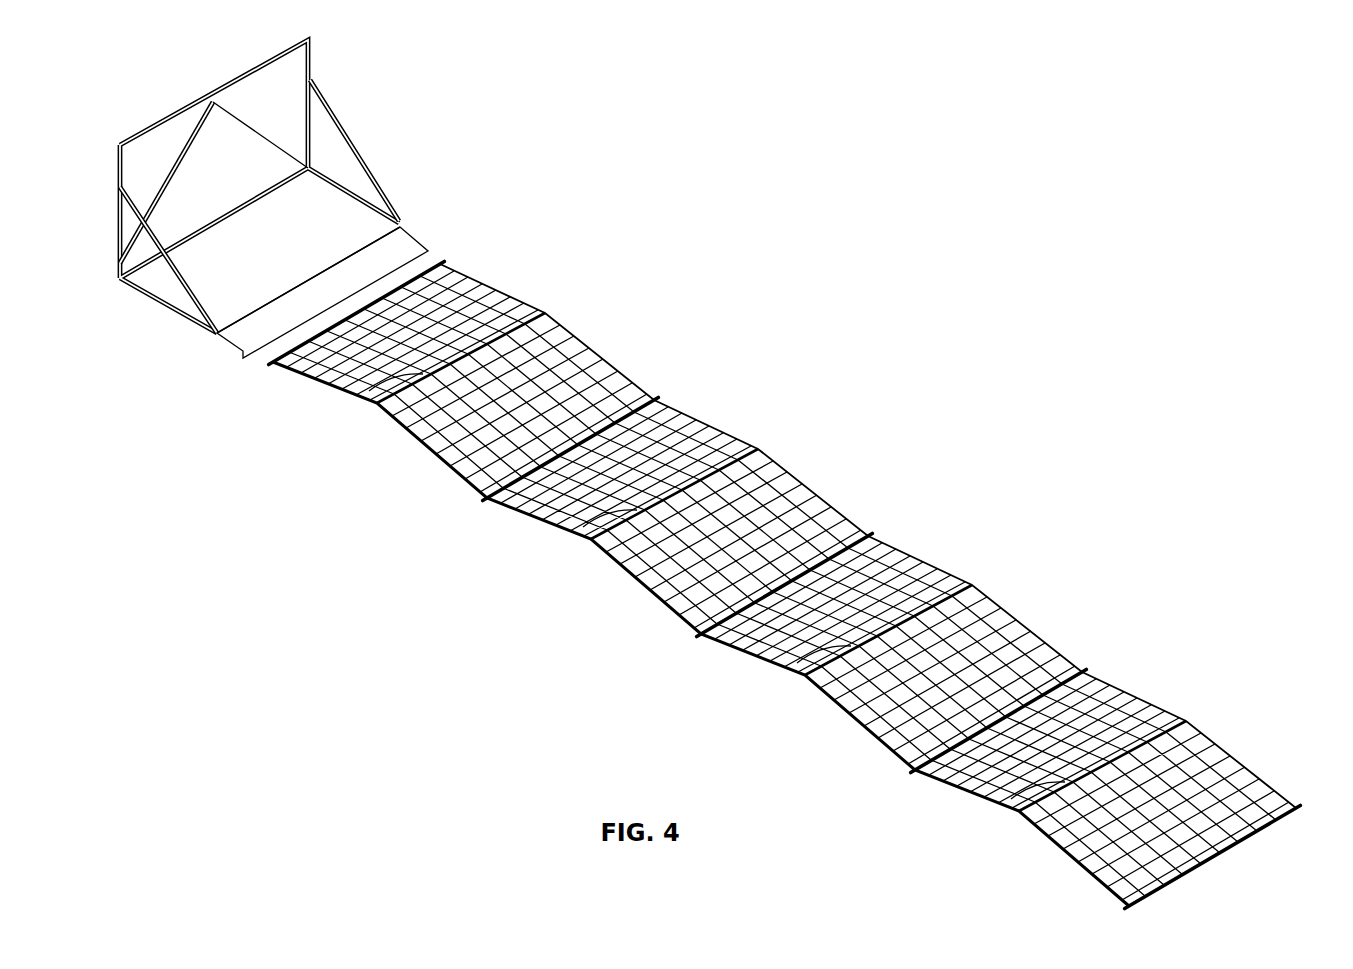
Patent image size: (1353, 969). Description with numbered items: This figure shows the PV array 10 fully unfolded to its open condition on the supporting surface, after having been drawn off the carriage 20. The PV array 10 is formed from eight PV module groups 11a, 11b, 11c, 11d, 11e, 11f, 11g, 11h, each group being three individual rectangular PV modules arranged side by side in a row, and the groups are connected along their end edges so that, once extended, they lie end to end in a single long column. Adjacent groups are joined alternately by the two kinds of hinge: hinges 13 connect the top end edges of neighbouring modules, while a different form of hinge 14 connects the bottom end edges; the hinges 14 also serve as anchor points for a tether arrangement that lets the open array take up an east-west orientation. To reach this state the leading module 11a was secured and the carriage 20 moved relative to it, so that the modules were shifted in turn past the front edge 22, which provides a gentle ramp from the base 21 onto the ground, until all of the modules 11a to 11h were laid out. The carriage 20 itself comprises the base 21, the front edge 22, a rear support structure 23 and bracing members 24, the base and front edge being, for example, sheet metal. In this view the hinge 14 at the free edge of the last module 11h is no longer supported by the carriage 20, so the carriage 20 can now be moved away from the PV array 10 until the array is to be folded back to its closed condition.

The PV array 10 is at (810, 553).
The PV module group 11a is at (1213, 740).
The PV module group 11b is at (1133, 690).
The PV module group 11c is at (1003, 609).
The PV module group 11d is at (910, 556).
The PV module group 11e is at (783, 470).
The PV module group 11f is at (693, 418).
The PV module group 11g is at (567, 345).
The PV module group 11h is at (492, 288).
The hinge 13 is at (365, 401).
The hinge 14 is at (403, 283).
The carriage 20 is at (296, 228).
The base 21 is at (233, 308).
The front edge 22 is at (257, 332).
The rear support structure 23 is at (183, 158).
The bracing members 24 is at (380, 193).